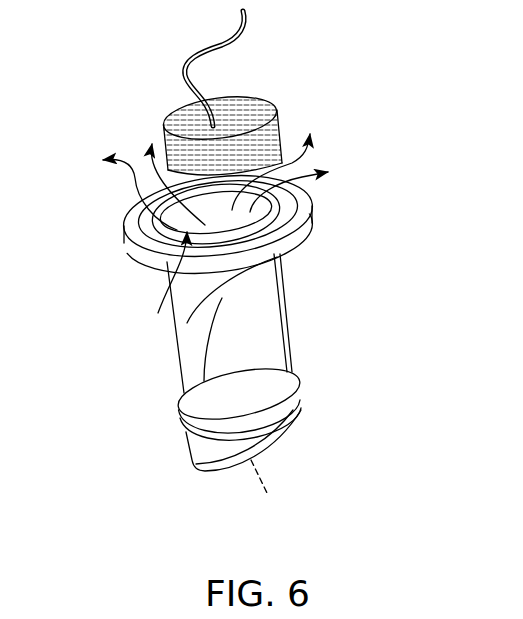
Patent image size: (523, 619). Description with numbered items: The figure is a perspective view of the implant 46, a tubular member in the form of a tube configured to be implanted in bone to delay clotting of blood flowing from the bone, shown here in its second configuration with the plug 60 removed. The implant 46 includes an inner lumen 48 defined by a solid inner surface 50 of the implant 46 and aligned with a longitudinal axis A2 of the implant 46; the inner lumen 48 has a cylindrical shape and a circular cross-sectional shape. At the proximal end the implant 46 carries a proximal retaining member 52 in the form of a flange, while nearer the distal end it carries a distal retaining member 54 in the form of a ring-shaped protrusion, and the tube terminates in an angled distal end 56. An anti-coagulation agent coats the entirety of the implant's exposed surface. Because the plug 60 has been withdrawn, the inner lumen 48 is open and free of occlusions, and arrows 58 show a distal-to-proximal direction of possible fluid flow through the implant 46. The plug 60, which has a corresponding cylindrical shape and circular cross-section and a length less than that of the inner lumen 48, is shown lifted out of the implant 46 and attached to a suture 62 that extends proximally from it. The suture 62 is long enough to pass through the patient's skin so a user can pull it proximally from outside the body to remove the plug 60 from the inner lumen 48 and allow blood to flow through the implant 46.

The implant 46 is at (288, 322).
The inner lumen 48 is at (167, 287).
The inner surface 50 is at (180, 228).
The proximal retaining member 52 is at (307, 227).
The distal retaining member 54 is at (300, 396).
The angled distal end 56 is at (293, 445).
The arrows 58 is at (121, 203).
The plug 60 is at (270, 108).
The suture 62 is at (250, 40).
The longitudinal axis A2 is at (255, 498).